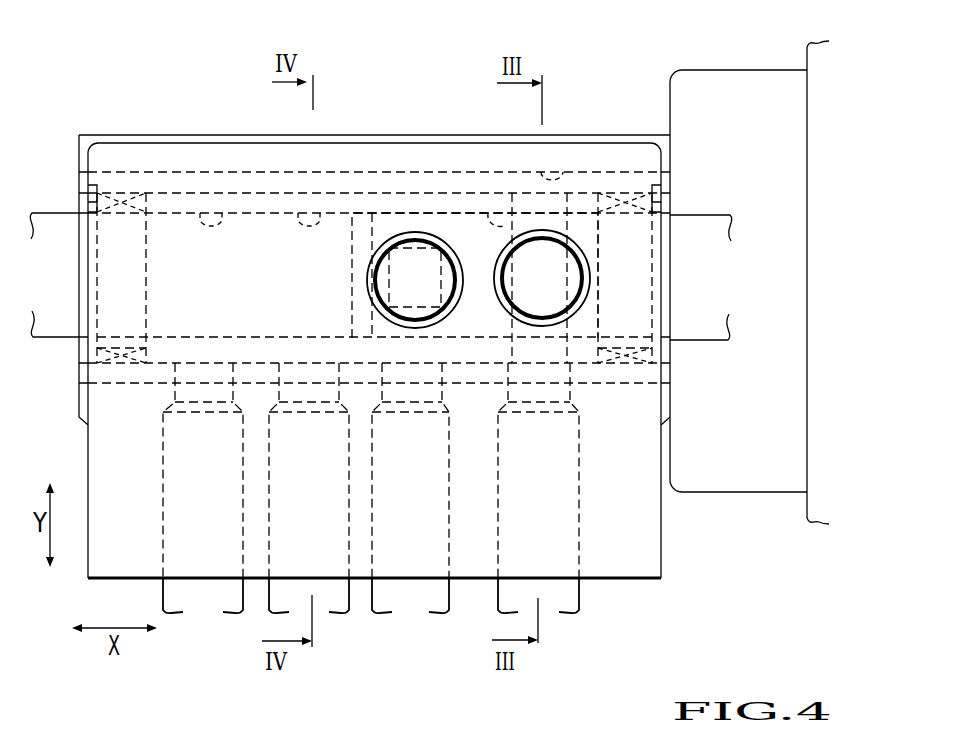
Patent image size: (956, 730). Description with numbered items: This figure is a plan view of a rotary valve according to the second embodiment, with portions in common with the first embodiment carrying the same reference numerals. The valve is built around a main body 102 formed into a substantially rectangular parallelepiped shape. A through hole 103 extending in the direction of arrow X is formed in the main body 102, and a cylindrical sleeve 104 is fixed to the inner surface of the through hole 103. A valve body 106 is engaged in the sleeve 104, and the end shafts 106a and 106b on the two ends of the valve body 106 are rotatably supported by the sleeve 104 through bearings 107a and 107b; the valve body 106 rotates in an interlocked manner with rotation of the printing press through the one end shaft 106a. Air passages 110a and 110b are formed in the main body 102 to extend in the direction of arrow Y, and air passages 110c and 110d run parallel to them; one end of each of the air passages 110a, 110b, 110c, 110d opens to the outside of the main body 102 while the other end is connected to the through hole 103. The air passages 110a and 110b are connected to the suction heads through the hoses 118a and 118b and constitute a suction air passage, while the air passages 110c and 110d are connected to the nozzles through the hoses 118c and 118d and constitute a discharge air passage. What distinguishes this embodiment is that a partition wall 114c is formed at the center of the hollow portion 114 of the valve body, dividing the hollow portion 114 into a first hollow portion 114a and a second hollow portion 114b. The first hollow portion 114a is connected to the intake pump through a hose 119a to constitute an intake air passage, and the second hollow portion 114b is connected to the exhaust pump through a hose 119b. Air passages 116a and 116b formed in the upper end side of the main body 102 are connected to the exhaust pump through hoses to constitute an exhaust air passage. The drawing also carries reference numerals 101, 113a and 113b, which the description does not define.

The electrical connector assembly 101 is at (557, 67).
The main body 102 is at (662, 552).
The through hole 103 is at (542, 175).
The cylindrical sleeve 104 is at (440, 213).
The valve body 106 is at (322, 190).
The end shaft 106a is at (660, 207).
The end shaft 106b is at (90, 205).
The bearing 107a is at (622, 193).
The bearing 107b is at (122, 193).
The air passage 110a is at (579, 540).
The air passage 110b is at (449, 540).
The air passage 110c is at (349, 545).
The air passage 110d is at (243, 545).
The guide portion 113a is at (530, 213).
The guide portion 113b is at (420, 213).
The hollow portion 114 is at (295, 205).
The first hollow portion 114a is at (505, 225).
The second hollow portion 114b is at (222, 205).
The partition wall 114c is at (382, 220).
The air passage 116a is at (492, 280).
The air passage 116b is at (463, 280).
The hose 118a is at (580, 598).
The hose 118b is at (449, 600).
The hose 118c is at (350, 598).
The hose 118d is at (163, 597).
The hose 119a is at (726, 342).
The hose 119b is at (40, 342).